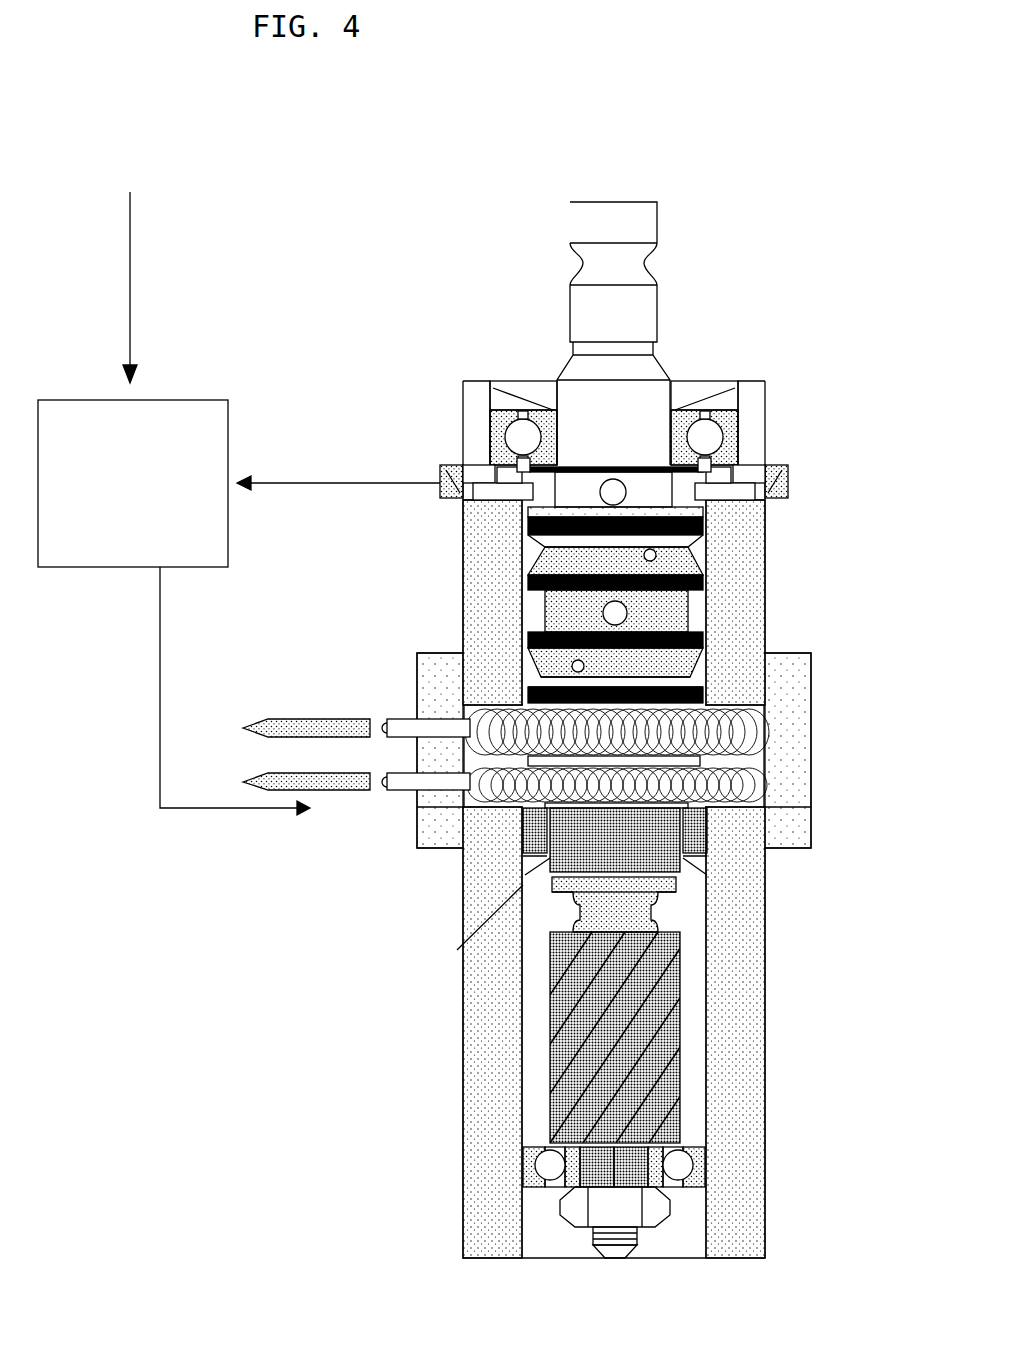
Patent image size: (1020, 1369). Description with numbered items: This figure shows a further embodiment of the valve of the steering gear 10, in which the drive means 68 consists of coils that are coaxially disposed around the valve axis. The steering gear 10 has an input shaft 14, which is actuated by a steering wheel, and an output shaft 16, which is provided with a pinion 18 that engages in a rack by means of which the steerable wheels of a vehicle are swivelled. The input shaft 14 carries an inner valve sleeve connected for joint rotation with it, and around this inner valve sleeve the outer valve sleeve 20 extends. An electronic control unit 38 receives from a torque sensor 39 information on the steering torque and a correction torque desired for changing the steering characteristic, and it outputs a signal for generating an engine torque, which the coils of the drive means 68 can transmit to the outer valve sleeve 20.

The steering gear 10 is at (742, 1078).
The input shaft 14 is at (640, 218).
The output shaft 16 is at (655, 858).
The pinion 18 is at (660, 1040).
The outer valve sleeve 20 is at (673, 607).
The electronic control unit 38 is at (200, 417).
The torque sensor 39 is at (443, 463).
The drive means 68 is at (758, 764).